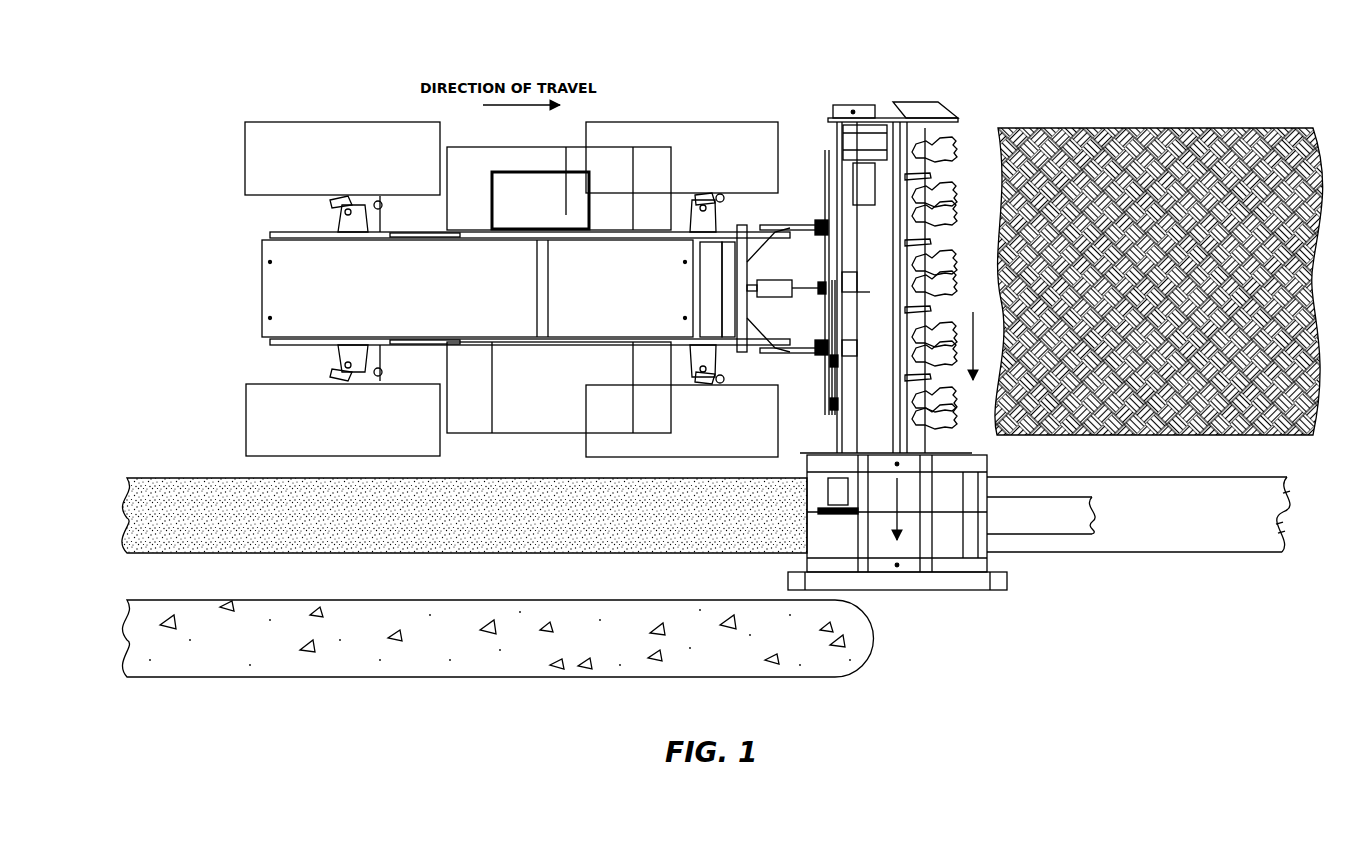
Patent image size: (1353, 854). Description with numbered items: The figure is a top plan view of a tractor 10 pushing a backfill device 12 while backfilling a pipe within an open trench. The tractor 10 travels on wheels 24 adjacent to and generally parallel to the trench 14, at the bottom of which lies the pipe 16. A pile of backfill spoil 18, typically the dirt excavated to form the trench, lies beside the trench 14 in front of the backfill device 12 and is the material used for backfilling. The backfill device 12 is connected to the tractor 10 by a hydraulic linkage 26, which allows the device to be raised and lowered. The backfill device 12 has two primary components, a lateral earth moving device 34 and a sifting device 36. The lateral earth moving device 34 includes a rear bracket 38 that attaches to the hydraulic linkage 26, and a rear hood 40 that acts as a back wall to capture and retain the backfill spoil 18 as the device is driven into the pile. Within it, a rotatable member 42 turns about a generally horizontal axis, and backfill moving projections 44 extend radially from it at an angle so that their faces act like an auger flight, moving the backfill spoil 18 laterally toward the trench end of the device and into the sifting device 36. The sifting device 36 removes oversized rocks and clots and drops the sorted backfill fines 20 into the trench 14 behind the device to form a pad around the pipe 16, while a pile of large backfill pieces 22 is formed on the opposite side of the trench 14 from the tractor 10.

The tractor 10 is at (305, 112).
The backfill device 12 is at (882, 78).
The trench 14 is at (1255, 493).
The pipe 16 is at (1068, 528).
The backfill spoil 18 is at (1166, 128).
The backfill fines 20 is at (165, 478).
The large backfill pieces 22 is at (333, 660).
The wheels 24 is at (250, 158).
The hydraulic linkage 26 is at (762, 242).
The lateral earth moving device 34 is at (920, 108).
The sifting device 36 is at (988, 466).
The rear bracket 38 is at (829, 168).
The rear hood 40 is at (862, 433).
The rotatable member 42 is at (935, 173).
The backfill moving projections 44 is at (940, 145).